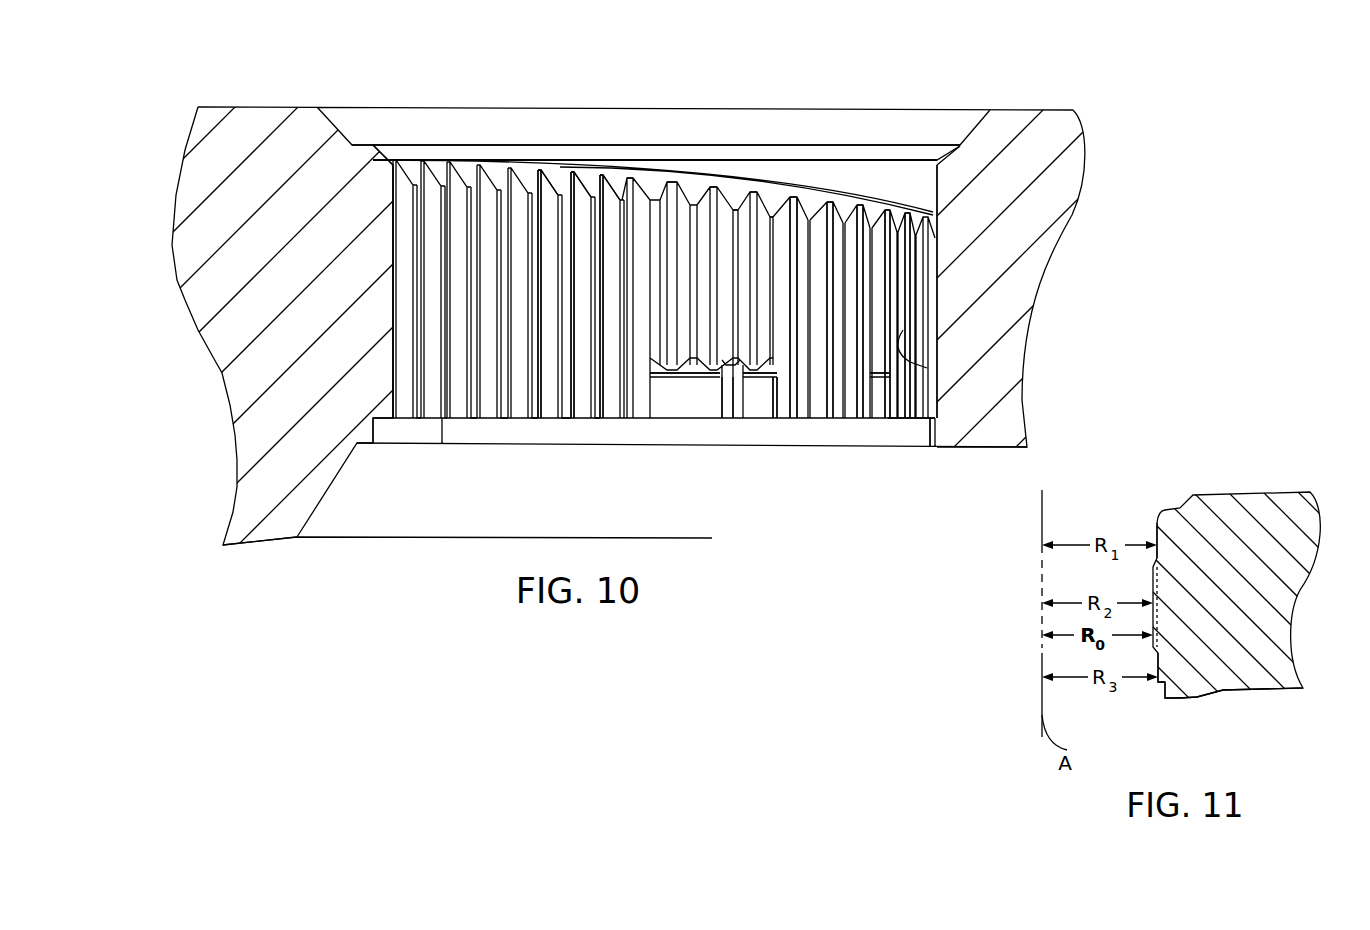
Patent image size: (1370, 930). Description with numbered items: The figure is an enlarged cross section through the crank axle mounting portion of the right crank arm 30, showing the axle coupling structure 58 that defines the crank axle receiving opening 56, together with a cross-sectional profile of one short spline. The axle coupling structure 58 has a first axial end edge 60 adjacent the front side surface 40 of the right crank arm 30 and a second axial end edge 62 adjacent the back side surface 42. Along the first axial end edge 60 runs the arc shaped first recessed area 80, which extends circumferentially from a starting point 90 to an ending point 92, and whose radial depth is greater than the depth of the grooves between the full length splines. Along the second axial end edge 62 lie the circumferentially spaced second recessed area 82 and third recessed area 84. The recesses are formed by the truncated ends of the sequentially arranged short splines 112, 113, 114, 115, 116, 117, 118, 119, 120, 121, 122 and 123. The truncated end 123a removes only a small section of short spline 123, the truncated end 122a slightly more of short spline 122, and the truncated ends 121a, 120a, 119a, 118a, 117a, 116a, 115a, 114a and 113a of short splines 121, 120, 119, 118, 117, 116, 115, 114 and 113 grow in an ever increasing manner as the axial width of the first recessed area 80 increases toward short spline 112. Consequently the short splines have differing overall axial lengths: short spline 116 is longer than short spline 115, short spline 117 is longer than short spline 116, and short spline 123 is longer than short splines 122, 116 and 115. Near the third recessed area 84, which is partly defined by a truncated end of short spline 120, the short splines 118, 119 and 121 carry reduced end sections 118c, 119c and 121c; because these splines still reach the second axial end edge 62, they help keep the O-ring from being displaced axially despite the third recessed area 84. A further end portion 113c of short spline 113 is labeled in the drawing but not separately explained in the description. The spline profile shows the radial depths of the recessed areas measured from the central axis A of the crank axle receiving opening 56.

In FIG. 10, the right crank arm 30 is at (252, 130).
In FIG. 11, the right crank arm 30 is at (1250, 690).
In FIG. 10, the front side surface 40 is at (282, 107).
In FIG. 10, the back side surface 42 is at (258, 546).
In FIG. 10, the crank axle receiving opening 56 is at (397, 190).
In FIG. 11, the crank axle receiving opening 56 is at (1163, 698).
In FIG. 10, the axle coupling structure 58 is at (570, 100).
In FIG. 10, the first axial end edge 60 is at (472, 160).
In FIG. 11, the first axial end edge 60 is at (1185, 510).
In FIG. 10, the second axial end edge 62 is at (442, 447).
In FIG. 11, the second axial end edge 62 is at (1182, 698).
In FIG. 10, the first recessed area 80 is at (910, 178).
In FIG. 11, the first recessed area 80 is at (1156, 535).
In FIG. 10, the second recessed area 82 is at (898, 414).
In FIG. 11, the second recessed area 82 is at (1157, 682).
In FIG. 10, the third recessed area 84 is at (698, 400).
In FIG. 10, the starting point 90 is at (924, 445).
In FIG. 10, the ending point 92 is at (547, 418).
In FIG. 10, the short spline 112 is at (935, 372).
In FIG. 10, the short spline 113 is at (895, 372).
In FIG. 10, the truncated end 113a is at (915, 224).
In FIG. 10, the tooth root 113c is at (893, 420).
In FIG. 10, the short spline 114 is at (890, 300).
In FIG. 10, the truncated end 114a is at (905, 197).
In FIG. 10, the short spline 115 is at (868, 273).
In FIG. 10, the truncated end 115a is at (860, 197).
In FIG. 10, the short spline 116 is at (841, 246).
In FIG. 10, the truncated end 116a is at (833, 200).
In FIG. 10, the short spline 117 is at (804, 317).
In FIG. 10, the truncated end 117a is at (812, 205).
In FIG. 10, the short spline 118 is at (774, 197).
In FIG. 10, the truncated end 118a is at (792, 197).
In FIG. 10, the reduced end section 118c is at (768, 400).
In FIG. 10, the short spline 119 is at (733, 207).
In FIG. 10, the truncated end 119a is at (745, 195).
In FIG. 10, the reduced end section 119c is at (740, 403).
In FIG. 10, the short spline 120 is at (680, 192).
In FIG. 10, the truncated end 120a is at (697, 195).
In FIG. 10, the short spline 121 is at (652, 418).
In FIG. 10, the truncated end 121a is at (612, 187).
In FIG. 10, the reduced end section 121c is at (657, 397).
In FIG. 10, the short spline 122 is at (610, 410).
In FIG. 10, the truncated end 122a is at (603, 183).
In FIG. 10, the short spline 123 is at (577, 410).
In FIG. 10, the truncated end 123a is at (570, 178).